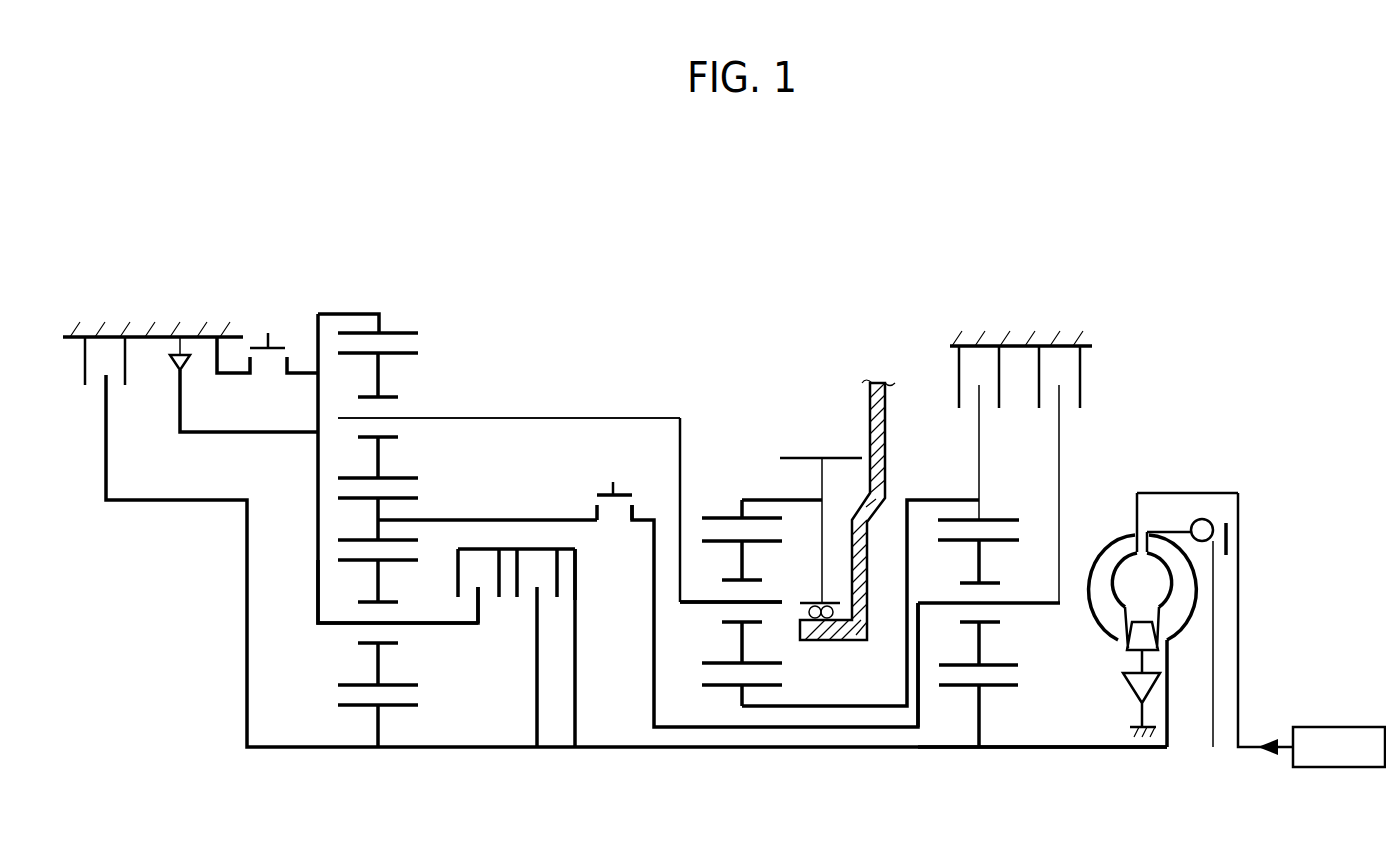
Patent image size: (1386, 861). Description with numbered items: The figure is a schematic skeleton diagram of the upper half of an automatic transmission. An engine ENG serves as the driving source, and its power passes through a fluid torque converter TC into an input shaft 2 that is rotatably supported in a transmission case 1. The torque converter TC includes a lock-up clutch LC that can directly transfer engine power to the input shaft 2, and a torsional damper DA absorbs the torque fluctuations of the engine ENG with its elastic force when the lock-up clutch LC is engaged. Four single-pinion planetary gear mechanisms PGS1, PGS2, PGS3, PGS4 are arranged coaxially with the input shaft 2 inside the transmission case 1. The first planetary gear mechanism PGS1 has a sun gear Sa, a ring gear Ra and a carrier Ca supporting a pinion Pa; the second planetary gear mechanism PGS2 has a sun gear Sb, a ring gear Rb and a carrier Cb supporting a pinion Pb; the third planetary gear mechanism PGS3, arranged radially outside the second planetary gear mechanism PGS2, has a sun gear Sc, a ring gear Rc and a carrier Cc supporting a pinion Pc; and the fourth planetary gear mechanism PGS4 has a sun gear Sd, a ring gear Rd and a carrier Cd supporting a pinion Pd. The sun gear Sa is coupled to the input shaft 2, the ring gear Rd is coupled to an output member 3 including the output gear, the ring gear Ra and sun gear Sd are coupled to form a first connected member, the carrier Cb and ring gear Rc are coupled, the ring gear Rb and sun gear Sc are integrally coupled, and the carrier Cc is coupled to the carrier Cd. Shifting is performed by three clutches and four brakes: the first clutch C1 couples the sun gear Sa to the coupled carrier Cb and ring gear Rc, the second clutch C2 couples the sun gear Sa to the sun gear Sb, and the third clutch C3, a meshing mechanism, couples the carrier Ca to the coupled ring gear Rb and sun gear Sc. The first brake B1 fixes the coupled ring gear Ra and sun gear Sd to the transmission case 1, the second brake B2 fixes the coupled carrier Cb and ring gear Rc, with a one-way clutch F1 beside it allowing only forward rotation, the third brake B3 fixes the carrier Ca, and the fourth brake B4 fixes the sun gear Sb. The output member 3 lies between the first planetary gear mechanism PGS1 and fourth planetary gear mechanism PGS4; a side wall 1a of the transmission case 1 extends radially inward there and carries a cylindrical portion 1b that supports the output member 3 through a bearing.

The transmission case 1 is at (191, 326).
The side wall 1a is at (869, 389).
The cylindrical portion 1b is at (838, 642).
The input shaft 2 is at (1105, 750).
The output member 3 is at (799, 456).
The first brake B1 is at (979, 377).
The second brake B2 is at (282, 333).
The third brake B3 is at (1059, 377).
The fourth brake B4 is at (105, 361).
The first clutch C1 is at (516, 586).
The second clutch C2 is at (546, 574).
The third clutch C3 is at (605, 487).
The one-way clutch F1 is at (172, 364).
The first planetary gear mechanism PGS1 is at (987, 758).
The second planetary gear mechanism PGS2 is at (380, 762).
The third planetary gear mechanism PGS3 is at (378, 302).
The fourth planetary gear mechanism PGS4 is at (752, 760).
The sun gear Sa is at (963, 688).
The ring gear Ra is at (1004, 520).
The pinion Pa is at (950, 688).
The carrier Ca is at (1045, 608).
The sun gear Sb is at (360, 710).
The ring gear Rb is at (407, 540).
The pinion Pb is at (345, 707).
The carrier Cb is at (323, 627).
The sun gear Sc is at (413, 493).
The ring gear Rc is at (359, 332).
The pinion Pc is at (418, 353).
The carrier Cc is at (467, 418).
The sun gear Sd is at (727, 688).
The ring gear Rd is at (701, 519).
The pinion Pd is at (715, 668).
The carrier Cd is at (687, 604).
The torque converter TC is at (1127, 500).
The torsional damper DA is at (1207, 516).
The lock-up clutch LC is at (1232, 531).
The engine ENG is at (1311, 630).